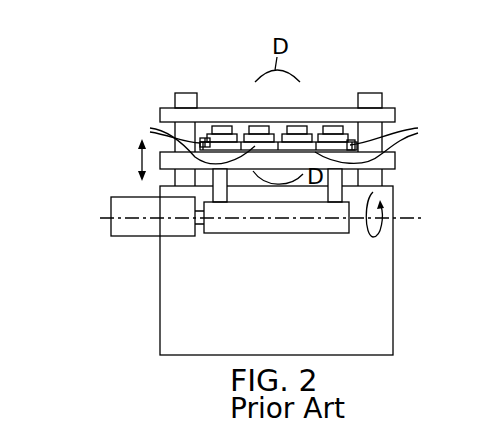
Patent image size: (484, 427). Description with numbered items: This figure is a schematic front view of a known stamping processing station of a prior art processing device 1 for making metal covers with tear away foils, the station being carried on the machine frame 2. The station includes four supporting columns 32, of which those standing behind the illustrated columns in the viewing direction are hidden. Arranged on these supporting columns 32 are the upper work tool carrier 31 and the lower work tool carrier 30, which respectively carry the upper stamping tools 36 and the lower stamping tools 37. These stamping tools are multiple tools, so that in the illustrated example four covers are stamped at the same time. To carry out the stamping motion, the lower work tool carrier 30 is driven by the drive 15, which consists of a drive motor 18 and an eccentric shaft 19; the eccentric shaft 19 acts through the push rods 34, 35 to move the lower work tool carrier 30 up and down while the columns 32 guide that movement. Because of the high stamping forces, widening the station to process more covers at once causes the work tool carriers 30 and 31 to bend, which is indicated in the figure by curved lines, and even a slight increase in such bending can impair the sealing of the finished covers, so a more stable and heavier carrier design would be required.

The device 1 is at (405, 268).
The machine frame 2 is at (176, 320).
The drive 15 is at (208, 245).
The drive motor 18 is at (143, 232).
The eccentric shaft 19 is at (280, 225).
The lower work tool carrier 30 is at (392, 160).
The upper work tool carrier 31 is at (385, 117).
The supporting columns 32 is at (184, 96).
The push rod 34 is at (335, 192).
The push rod 35 is at (219, 192).
The upper stamping tools 36 is at (258, 126).
The lower stamping tools 37 is at (286, 138).